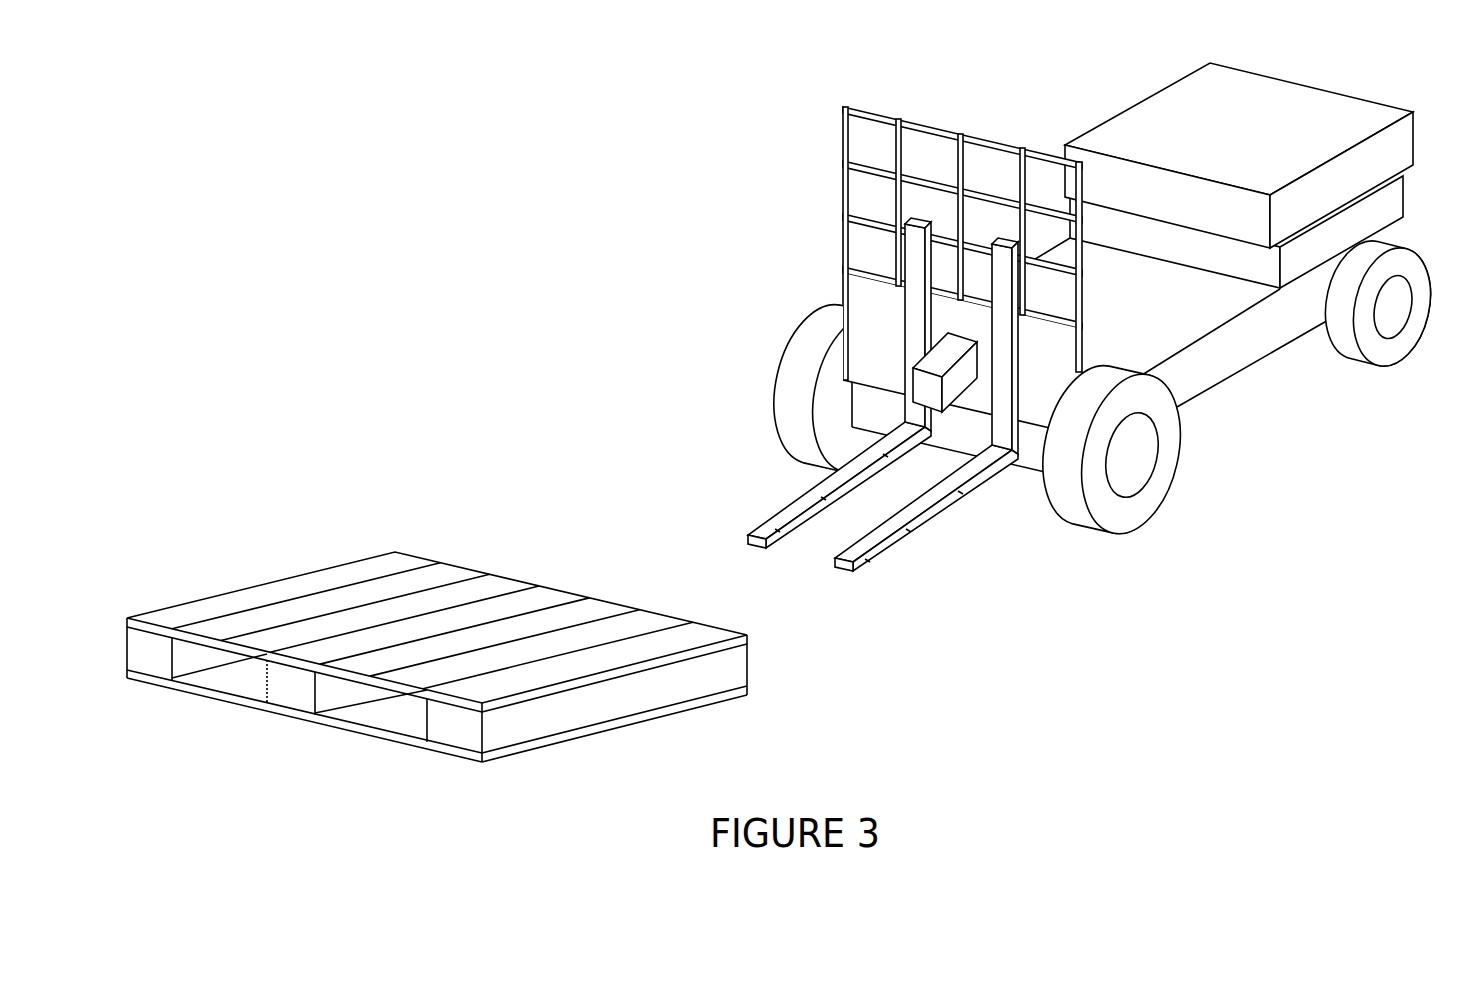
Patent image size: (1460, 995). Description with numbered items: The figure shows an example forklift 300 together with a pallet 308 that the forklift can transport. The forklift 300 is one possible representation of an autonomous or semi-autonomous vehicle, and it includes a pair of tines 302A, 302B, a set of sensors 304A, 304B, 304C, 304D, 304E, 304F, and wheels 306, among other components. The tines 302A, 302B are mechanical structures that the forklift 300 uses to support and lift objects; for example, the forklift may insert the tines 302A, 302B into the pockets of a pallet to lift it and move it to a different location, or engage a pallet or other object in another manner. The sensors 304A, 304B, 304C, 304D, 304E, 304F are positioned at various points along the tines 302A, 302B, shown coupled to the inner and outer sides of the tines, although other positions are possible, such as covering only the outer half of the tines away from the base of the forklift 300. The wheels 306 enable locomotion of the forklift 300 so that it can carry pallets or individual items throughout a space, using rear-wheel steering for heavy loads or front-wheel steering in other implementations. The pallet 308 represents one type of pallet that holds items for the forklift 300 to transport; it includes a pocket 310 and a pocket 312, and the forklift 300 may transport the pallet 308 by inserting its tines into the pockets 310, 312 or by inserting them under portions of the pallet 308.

The forklift 300 is at (1240, 72).
The tine 302A is at (762, 548).
The tine 302B is at (845, 568).
The sensor 304A is at (777, 528).
The sensor 304B is at (823, 498).
The sensor 304C is at (885, 458).
The sensor 304D is at (867, 565).
The sensor 304E is at (908, 530).
The sensor 304F is at (960, 492).
The wheels 306 is at (795, 332).
The pallet 308 is at (437, 643).
The pocket 310 is at (400, 728).
The pocket 312 is at (227, 683).